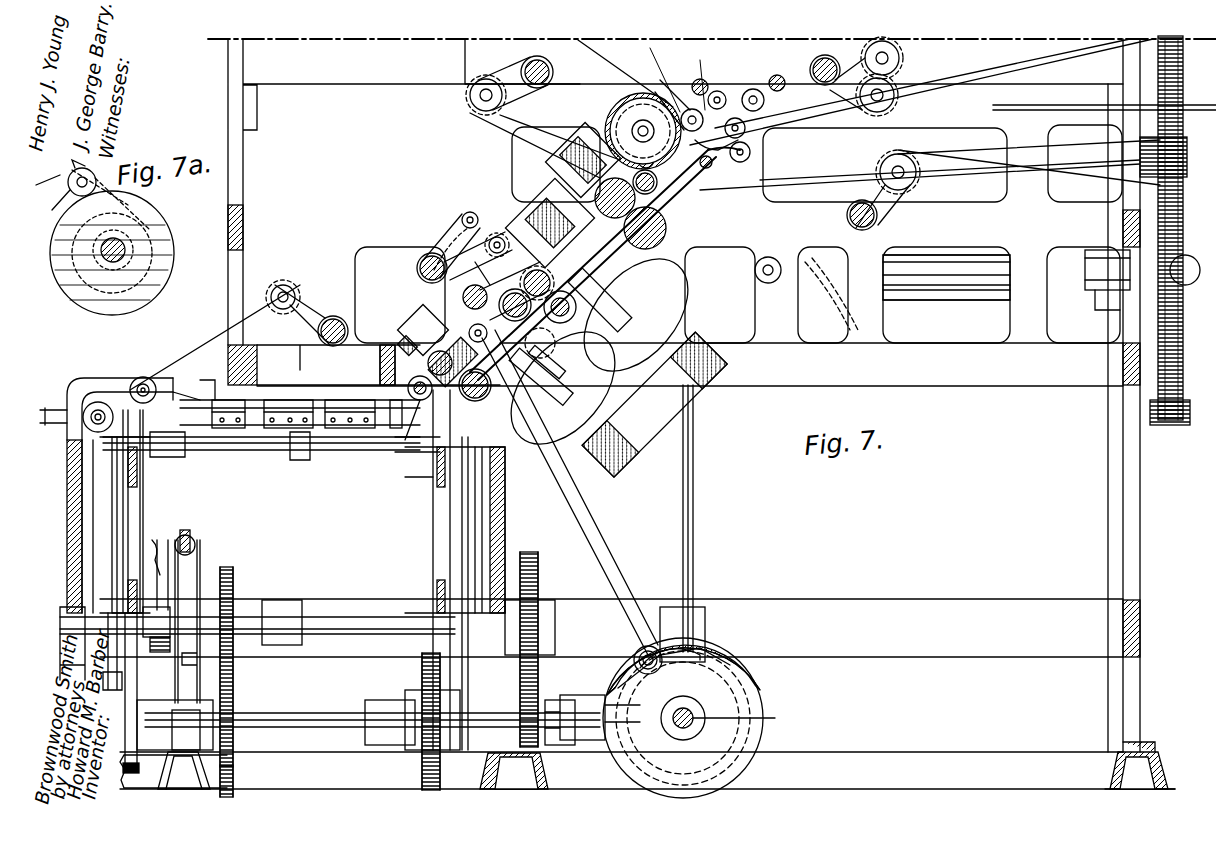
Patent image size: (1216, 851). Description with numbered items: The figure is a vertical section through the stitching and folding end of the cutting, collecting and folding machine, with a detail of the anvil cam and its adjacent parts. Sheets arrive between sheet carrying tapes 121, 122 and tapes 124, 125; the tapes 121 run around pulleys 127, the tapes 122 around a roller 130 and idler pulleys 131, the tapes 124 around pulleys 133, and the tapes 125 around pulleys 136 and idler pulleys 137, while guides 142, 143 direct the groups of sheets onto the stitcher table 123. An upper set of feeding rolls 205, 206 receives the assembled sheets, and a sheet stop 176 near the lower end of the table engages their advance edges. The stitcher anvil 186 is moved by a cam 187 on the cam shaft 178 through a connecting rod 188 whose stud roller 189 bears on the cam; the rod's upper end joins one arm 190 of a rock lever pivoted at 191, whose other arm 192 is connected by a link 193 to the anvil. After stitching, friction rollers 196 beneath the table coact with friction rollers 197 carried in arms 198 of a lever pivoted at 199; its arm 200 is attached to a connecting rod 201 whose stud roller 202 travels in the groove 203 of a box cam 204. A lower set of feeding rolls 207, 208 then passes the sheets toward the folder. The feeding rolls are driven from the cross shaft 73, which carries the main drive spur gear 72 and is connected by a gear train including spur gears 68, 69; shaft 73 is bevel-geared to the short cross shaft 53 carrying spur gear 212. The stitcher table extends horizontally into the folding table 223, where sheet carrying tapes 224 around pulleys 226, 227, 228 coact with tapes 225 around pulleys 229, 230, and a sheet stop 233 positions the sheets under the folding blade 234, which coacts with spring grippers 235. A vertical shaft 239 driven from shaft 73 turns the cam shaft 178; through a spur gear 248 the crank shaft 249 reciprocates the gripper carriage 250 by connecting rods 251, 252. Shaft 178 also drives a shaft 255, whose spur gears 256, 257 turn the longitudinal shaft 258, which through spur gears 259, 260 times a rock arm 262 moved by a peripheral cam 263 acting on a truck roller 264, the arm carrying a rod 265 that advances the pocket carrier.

In FIG. 7, the cross shaft 53 is at (757, 278).
In FIG. 7, the spur gear 68 is at (1165, 145).
In FIG. 7, the spur gear 69 is at (1179, 230).
In FIG. 7, the main drive spur gear 72 is at (1160, 296).
In FIG. 7, the cross shaft 73 is at (955, 281).
In FIG. 7, the sheet carrying tapes 121 is at (669, 83).
In FIG. 7, the sheet carrying tapes 122 is at (470, 70).
In FIG. 7, the stitcher table 123 is at (650, 185).
In FIG. 7, the sheet carrying tapes 124 is at (732, 118).
In FIG. 7, the sheet carrying tapes 125 is at (860, 93).
In FIG. 7, the pulleys 127 is at (661, 94).
In FIG. 7, the roller 130 is at (630, 131).
In FIG. 7, the idler pulleys 131 is at (496, 100).
In FIG. 7, the pulleys 133 is at (752, 88).
In FIG. 7, the pulleys 136 is at (812, 70).
In FIG. 7, the idler pulleys 137 is at (888, 58).
In FIG. 7, the guide 142 is at (722, 92).
In FIG. 7, the guide 143 is at (722, 162).
In FIG. 7, the sheet stop 176 is at (470, 332).
In FIG. 7A, the cam shaft 178 is at (125, 262).
In FIG. 7, the cam shaft 178 is at (742, 718).
In FIG. 7, the stitcher anvil 186 is at (540, 228).
In FIG. 7A, the cam 187 is at (90, 296).
In FIG. 7, the cam 187 is at (625, 672).
In FIG. 7A, the connecting rod 188 is at (78, 168).
In FIG. 7, the connecting rod 188 is at (583, 492).
In FIG. 7A, the stud roller 189 is at (70, 192).
In FIG. 7, the stud roller 189 is at (646, 645).
In FIG. 7, the arm 190 is at (470, 268).
In FIG. 7, the pivot 191 is at (420, 274).
In FIG. 7, the arm 192 is at (448, 236).
In FIG. 7, the link 193 is at (472, 212).
In FIG. 7, the friction rollers 196 is at (575, 312).
In FIG. 7, the friction rollers 197 is at (552, 278).
In FIG. 7, the arms 198 is at (515, 288).
In FIG. 7, the pivot 199 is at (563, 387).
In FIG. 7, the arm 200 is at (466, 298).
In FIG. 7, the connecting rod 201 is at (540, 445).
In FIG. 7, the stud roller 202 is at (638, 656).
In FIG. 7, the groove 203 is at (700, 660).
In FIG. 7, the box cam 204 is at (760, 688).
In FIG. 7, the feeding roll 205 is at (605, 200).
In FIG. 7, the feeding roll 206 is at (665, 232).
In FIG. 7, the feeding roll 207 is at (408, 322).
In FIG. 7, the feeding roll 208 is at (500, 392).
In FIG. 7, the spur gear 212 is at (831, 294).
In FIG. 7, the folding table 223 is at (195, 370).
In FIG. 7, the sheet carrying tapes 224 is at (283, 312).
In FIG. 7, the sheet carrying tapes 225 is at (92, 400).
In FIG. 7, the pulley 226 is at (410, 425).
In FIG. 7, the pulley 227 is at (138, 378).
In FIG. 7, the pulley 228 is at (284, 285).
In FIG. 7, the pulley 229 is at (478, 420).
In FIG. 7, the pulley 230 is at (95, 428).
In FIG. 7, the sheet stop 233 is at (192, 376).
In FIG. 7, the folding blade 234 is at (378, 364).
In FIG. 7, the spring grippers 235 is at (340, 404).
In FIG. 7, the vertical shaft 239 is at (695, 486).
In FIG. 7, the spur gear 248 is at (420, 690).
In FIG. 7, the crank shaft 249 is at (283, 720).
In FIG. 7, the gripper carriage 250 is at (325, 452).
In FIG. 7, the connecting rod 251 is at (118, 500).
In FIG. 7, the connecting rod 252 is at (455, 567).
In FIG. 7, the shaft 255 is at (552, 710).
In FIG. 7, the spur gear 256 is at (532, 771).
In FIG. 7, the spur gear 257 is at (530, 638).
In FIG. 7, the longitudinal shaft 258 is at (278, 615).
In FIG. 7, the spur gear 259 is at (235, 580).
In FIG. 7, the spur gear 260 is at (233, 765).
In FIG. 7, the rock arm 262 is at (172, 600).
In FIG. 7, the peripheral cam 263 is at (172, 547).
In FIG. 7, the truck roller 264 is at (168, 620).
In FIG. 7, the rod 265 is at (185, 528).